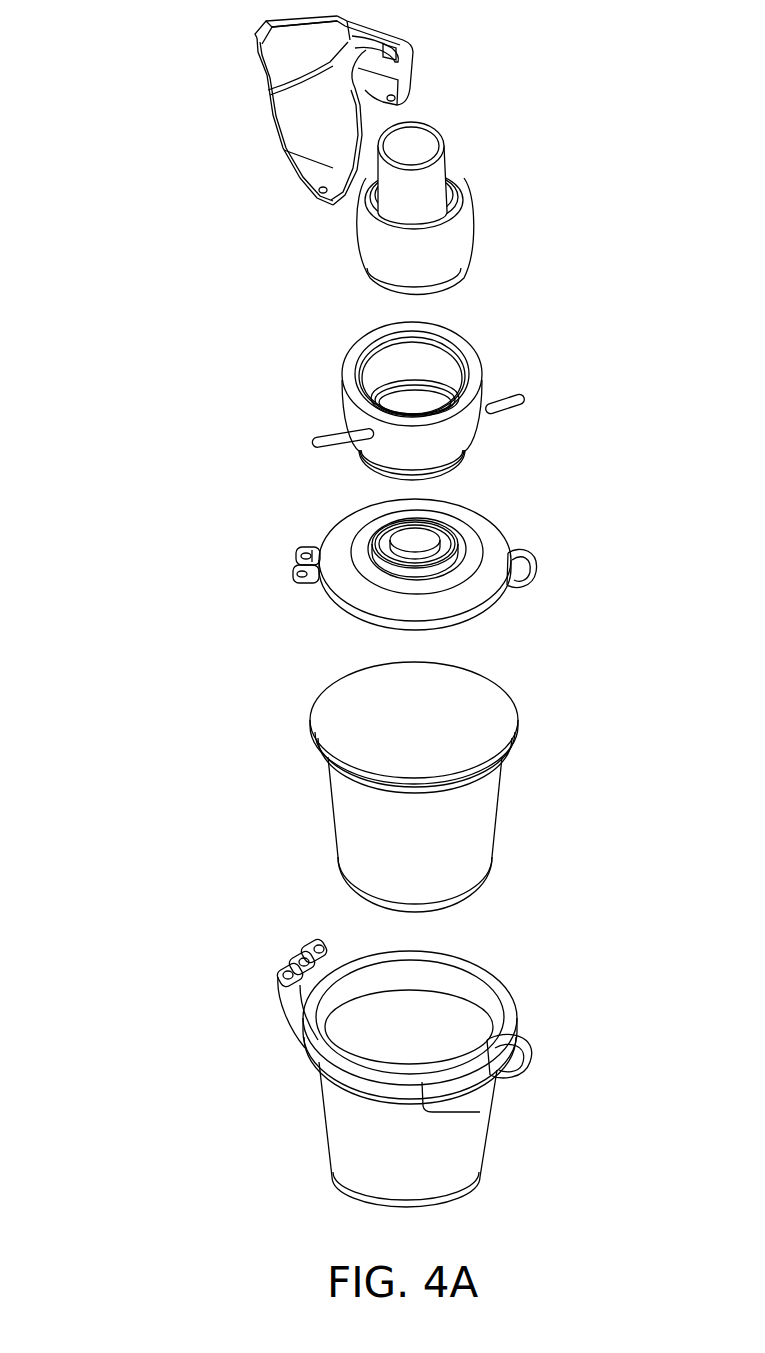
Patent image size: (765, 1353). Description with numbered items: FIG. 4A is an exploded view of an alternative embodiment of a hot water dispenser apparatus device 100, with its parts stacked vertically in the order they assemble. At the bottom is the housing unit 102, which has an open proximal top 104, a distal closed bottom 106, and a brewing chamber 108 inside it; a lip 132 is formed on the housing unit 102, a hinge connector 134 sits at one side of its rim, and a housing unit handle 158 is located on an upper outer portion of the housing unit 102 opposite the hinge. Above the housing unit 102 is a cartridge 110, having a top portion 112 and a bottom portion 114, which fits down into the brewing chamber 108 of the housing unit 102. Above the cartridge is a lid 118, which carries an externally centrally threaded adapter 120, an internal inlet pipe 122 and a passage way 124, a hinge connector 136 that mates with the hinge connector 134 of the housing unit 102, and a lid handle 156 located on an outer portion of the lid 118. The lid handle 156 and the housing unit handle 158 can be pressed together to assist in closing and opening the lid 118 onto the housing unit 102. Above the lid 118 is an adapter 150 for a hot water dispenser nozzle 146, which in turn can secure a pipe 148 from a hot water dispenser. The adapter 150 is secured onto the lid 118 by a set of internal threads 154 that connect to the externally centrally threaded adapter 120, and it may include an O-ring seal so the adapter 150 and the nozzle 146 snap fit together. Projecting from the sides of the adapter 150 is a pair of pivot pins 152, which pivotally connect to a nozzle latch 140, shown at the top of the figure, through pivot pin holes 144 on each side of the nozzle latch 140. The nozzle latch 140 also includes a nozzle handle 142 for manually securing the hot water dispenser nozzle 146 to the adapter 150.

The hot water dispenser apparatus device 100 is at (135, 68).
The housing unit 102 is at (335, 1121).
The open proximal top 104 is at (470, 956).
The distal closed bottom 106 is at (470, 1195).
The brewing chamber 108 is at (461, 1029).
The cartridge 110 is at (350, 823).
The top portion 112 is at (487, 704).
The bottom portion 114 is at (462, 902).
The lid 118 is at (350, 606).
The externally centrally threaded adapter 120 is at (465, 545).
The internal inlet pipe 122 is at (457, 525).
The passage way 124 is at (388, 527).
The lip 132 is at (480, 1112).
The hinge connector 134 is at (285, 968).
The hinge connector 136 is at (296, 563).
The nozzle latch 140 is at (283, 110).
The nozzle handle 142 is at (285, 40).
The pivot pin holes 144 is at (319, 191).
The hot water dispenser nozzle 146 is at (446, 257).
The pipe 148 is at (427, 183).
The adapter 150 is at (356, 406).
The pivot pins 152 is at (302, 447).
The internal threads 154 is at (407, 392).
The lid handle 156 is at (538, 566).
The housing unit handle 158 is at (536, 1061).